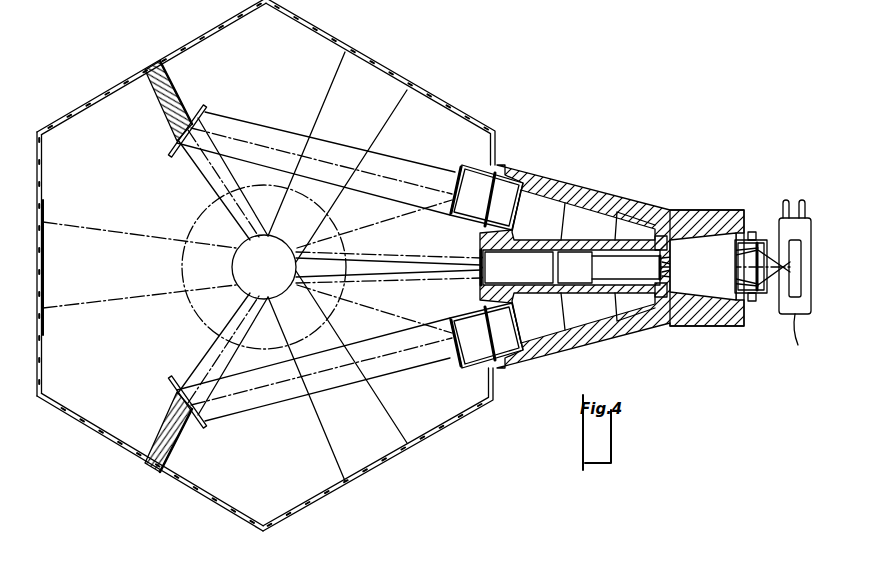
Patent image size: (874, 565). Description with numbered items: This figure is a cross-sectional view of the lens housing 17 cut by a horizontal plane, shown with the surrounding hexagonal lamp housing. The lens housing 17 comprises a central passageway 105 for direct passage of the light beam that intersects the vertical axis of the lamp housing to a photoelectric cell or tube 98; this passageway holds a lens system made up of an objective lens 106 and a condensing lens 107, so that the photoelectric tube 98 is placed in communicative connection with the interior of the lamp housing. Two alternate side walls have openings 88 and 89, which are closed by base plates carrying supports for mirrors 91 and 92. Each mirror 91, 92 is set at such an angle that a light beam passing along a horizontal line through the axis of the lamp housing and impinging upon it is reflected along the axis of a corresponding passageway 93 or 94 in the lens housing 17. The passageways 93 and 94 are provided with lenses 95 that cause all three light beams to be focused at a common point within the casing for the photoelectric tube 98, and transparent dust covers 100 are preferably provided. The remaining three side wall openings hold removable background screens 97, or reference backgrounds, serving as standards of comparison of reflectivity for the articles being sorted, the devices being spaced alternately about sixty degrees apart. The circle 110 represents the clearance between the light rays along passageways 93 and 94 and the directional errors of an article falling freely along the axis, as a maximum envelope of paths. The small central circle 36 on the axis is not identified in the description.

The lens housing 17 is at (608, 196).
The sample cell 36 is at (270, 299).
The opening 88 is at (127, 451).
The opening 89 is at (146, 70).
The mirror 91 is at (208, 430).
The mirror 92 is at (210, 106).
The passageway 93 is at (545, 334).
The passageway 94 is at (565, 208).
The lens 95 is at (500, 164).
The background screen 97 is at (362, 58).
The photoelectric tube 98 is at (797, 320).
The transparent dust cover 100 is at (455, 190).
The passageway 105 is at (519, 267).
The objective lens 106 is at (576, 267).
The condensing lens 107 is at (704, 327).
The circle 110 is at (332, 307).